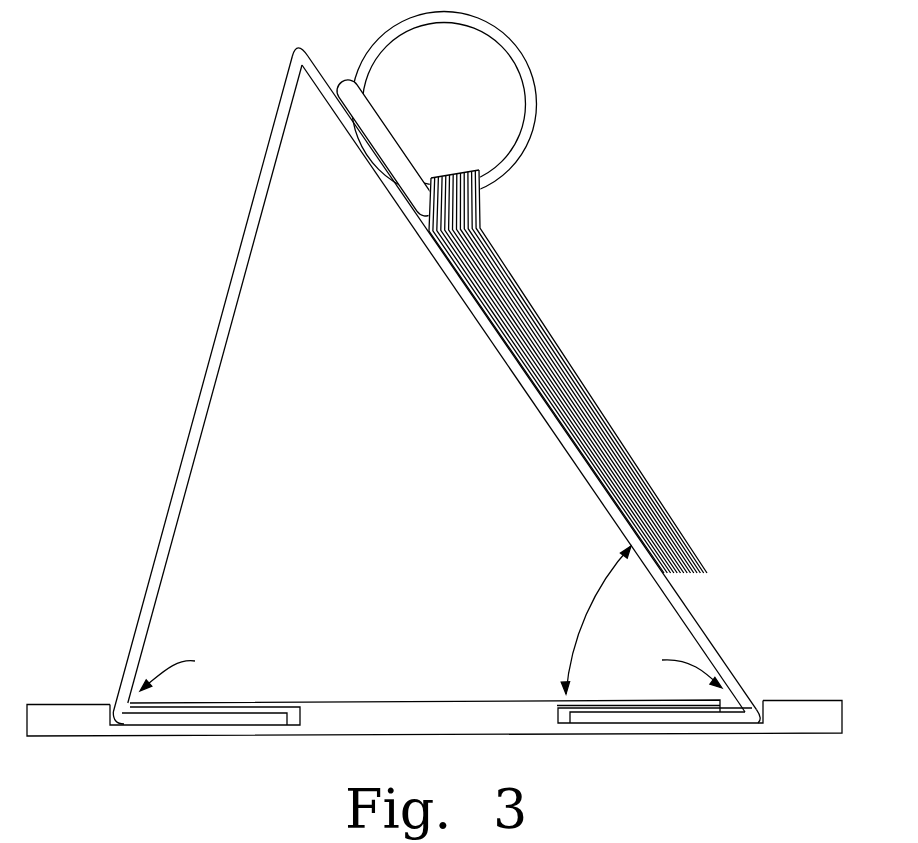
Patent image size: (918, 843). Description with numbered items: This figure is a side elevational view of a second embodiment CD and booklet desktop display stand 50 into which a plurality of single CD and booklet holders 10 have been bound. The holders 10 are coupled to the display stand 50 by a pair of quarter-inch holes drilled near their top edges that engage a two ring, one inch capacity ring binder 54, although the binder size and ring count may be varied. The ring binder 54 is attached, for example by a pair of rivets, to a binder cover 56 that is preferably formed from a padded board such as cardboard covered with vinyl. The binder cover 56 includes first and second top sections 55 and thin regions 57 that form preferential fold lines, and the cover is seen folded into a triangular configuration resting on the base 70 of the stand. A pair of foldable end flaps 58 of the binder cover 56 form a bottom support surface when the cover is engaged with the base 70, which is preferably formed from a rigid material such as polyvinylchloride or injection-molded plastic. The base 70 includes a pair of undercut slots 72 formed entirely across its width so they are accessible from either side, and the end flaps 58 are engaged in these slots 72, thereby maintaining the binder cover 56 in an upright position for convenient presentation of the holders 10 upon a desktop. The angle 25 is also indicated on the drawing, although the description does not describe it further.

The single CD and booklet holder 10 is at (641, 475).
The angle 25 is at (578, 608).
The display stand 50 is at (410, 399).
The ring binder 54 is at (537, 96).
The top section 55 is at (226, 354).
The binder cover 56 is at (178, 470).
The thin region 57 is at (309, 110).
The end flap 58 is at (197, 720).
The base 70 is at (434, 713).
The undercut slot 72 is at (431, 667).